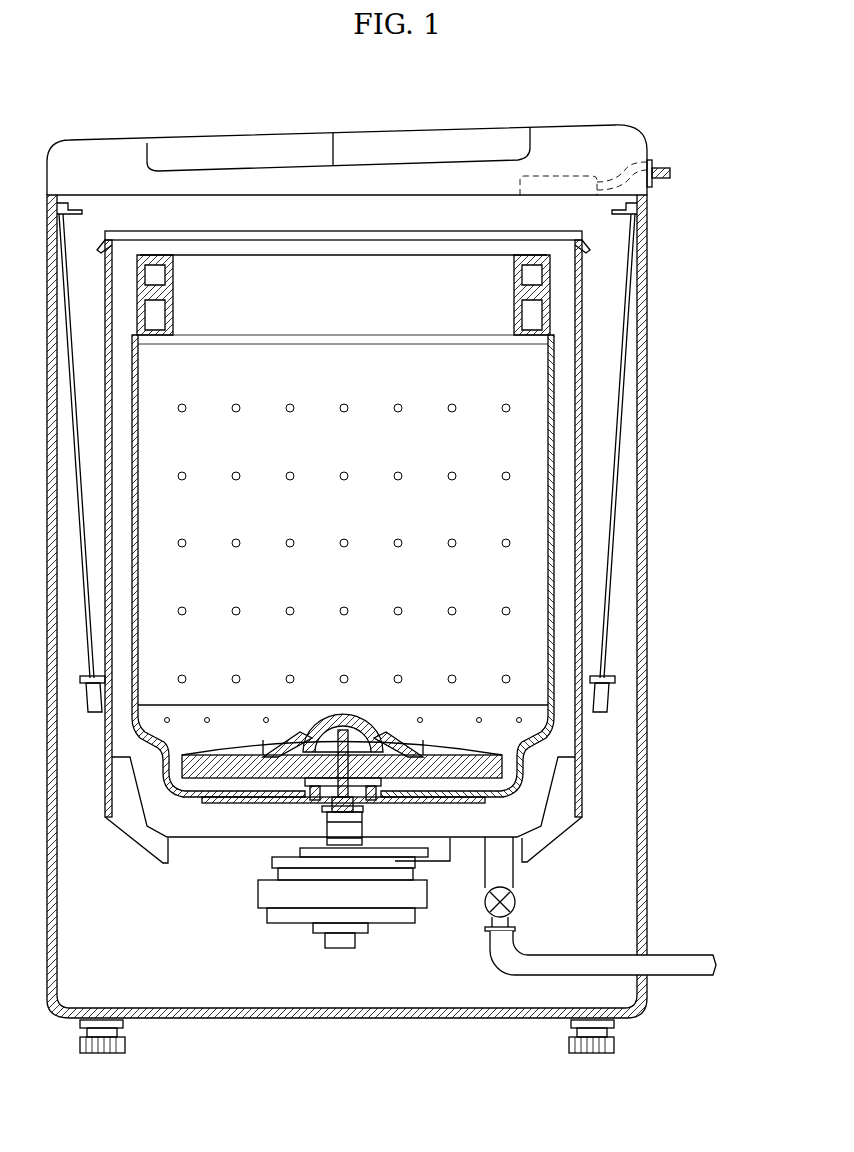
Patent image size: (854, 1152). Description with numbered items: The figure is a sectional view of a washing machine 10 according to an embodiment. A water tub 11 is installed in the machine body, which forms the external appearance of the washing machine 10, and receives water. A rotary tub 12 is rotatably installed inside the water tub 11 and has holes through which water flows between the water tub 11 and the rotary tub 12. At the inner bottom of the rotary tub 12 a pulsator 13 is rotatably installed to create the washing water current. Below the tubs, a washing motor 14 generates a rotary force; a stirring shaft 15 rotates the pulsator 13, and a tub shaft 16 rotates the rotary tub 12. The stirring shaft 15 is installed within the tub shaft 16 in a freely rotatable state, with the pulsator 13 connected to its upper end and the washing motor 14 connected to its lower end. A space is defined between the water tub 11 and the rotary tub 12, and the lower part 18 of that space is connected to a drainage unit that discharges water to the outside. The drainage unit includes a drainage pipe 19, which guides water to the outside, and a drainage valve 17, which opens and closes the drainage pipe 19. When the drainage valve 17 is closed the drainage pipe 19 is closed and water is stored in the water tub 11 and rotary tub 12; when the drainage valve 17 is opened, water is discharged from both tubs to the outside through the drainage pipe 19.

The washing machine 10 is at (662, 133).
The water tub 11 is at (578, 425).
The rotary tub 12 is at (553, 490).
The pulsator 13 is at (502, 768).
The washing motor 14 is at (258, 934).
The stirring shaft 15 is at (343, 738).
The tub shaft 16 is at (340, 812).
The drainage valve 17 is at (515, 903).
The lower part 18 is at (462, 828).
The drainage pipe 19 is at (503, 873).